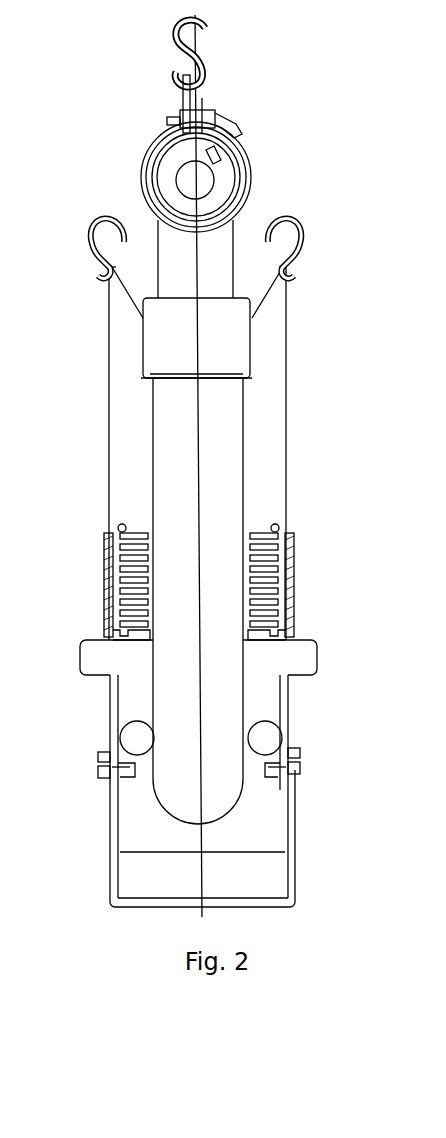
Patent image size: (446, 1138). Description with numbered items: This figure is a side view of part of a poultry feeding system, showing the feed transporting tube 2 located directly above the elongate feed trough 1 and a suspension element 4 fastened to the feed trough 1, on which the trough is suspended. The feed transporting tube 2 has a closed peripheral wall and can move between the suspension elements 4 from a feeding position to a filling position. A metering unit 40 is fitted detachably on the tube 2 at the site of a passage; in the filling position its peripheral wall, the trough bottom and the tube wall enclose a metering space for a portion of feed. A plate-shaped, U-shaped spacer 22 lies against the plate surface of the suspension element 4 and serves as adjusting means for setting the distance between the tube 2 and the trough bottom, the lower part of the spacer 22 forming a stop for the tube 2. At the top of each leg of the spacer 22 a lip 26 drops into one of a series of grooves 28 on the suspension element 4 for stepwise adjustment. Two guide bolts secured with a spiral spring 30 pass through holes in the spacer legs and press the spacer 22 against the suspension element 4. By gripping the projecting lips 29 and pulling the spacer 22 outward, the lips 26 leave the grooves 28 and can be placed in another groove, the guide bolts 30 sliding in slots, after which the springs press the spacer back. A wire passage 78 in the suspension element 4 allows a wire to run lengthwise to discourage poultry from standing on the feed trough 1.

The feed trough 1 is at (330, 880).
The feed transporting tube 2 is at (105, 153).
The suspension element 4 is at (302, 382).
The spacer 22 is at (108, 702).
The lip 26 is at (110, 633).
The grooves 28 is at (117, 577).
The projecting lip 29 is at (87, 658).
The guide bolt with spiral spring 30 is at (128, 740).
The metering unit 40 is at (253, 275).
The wire passage 78 is at (118, 525).